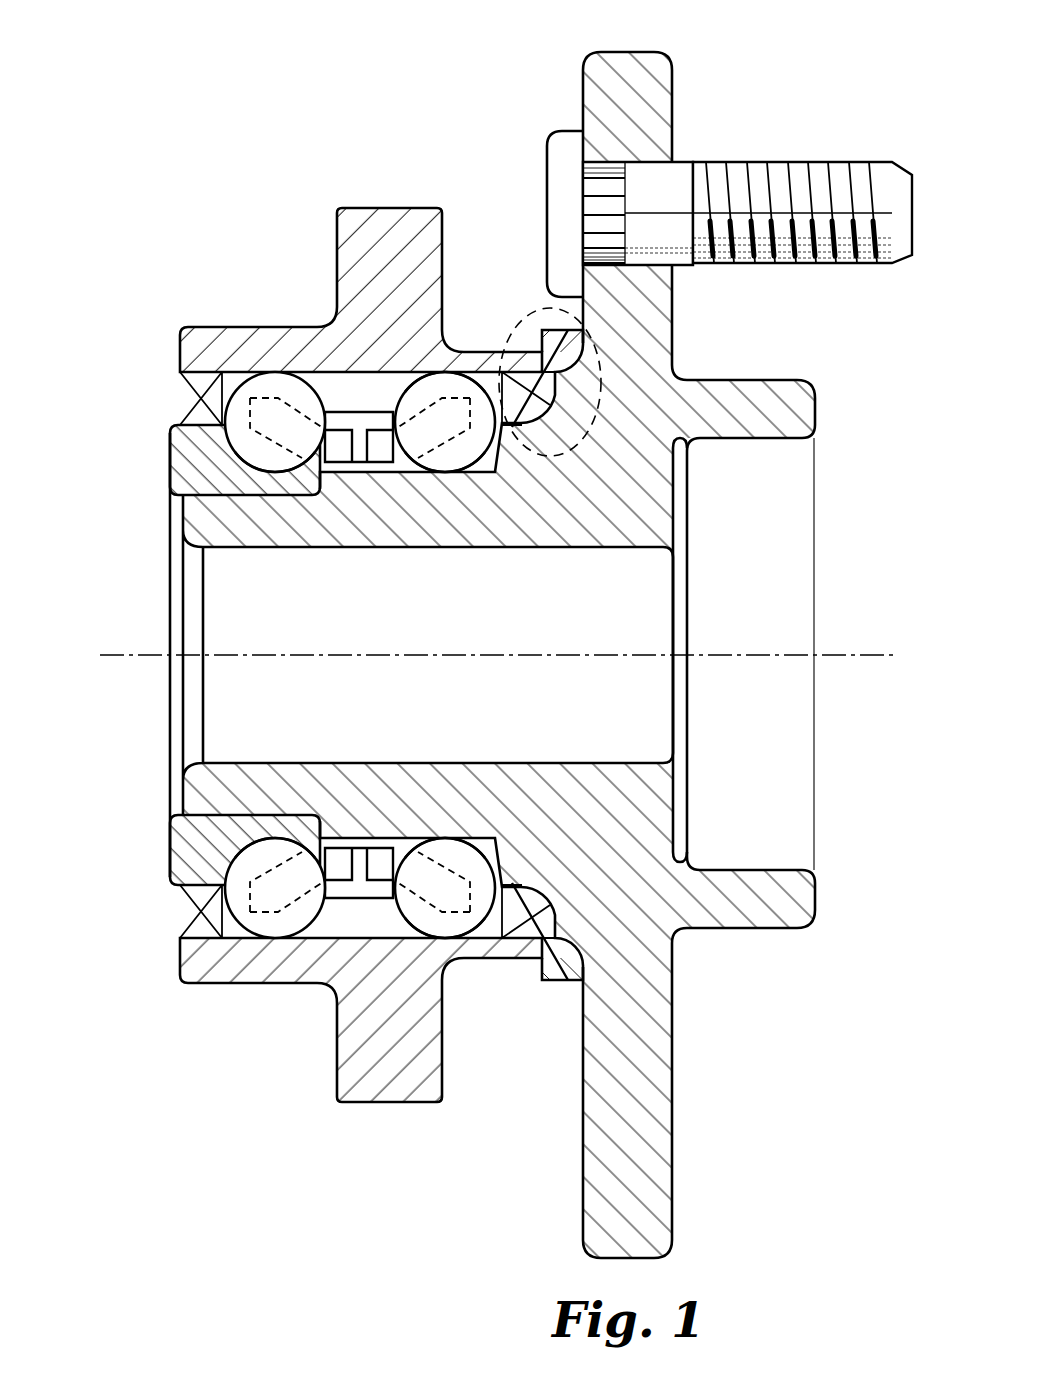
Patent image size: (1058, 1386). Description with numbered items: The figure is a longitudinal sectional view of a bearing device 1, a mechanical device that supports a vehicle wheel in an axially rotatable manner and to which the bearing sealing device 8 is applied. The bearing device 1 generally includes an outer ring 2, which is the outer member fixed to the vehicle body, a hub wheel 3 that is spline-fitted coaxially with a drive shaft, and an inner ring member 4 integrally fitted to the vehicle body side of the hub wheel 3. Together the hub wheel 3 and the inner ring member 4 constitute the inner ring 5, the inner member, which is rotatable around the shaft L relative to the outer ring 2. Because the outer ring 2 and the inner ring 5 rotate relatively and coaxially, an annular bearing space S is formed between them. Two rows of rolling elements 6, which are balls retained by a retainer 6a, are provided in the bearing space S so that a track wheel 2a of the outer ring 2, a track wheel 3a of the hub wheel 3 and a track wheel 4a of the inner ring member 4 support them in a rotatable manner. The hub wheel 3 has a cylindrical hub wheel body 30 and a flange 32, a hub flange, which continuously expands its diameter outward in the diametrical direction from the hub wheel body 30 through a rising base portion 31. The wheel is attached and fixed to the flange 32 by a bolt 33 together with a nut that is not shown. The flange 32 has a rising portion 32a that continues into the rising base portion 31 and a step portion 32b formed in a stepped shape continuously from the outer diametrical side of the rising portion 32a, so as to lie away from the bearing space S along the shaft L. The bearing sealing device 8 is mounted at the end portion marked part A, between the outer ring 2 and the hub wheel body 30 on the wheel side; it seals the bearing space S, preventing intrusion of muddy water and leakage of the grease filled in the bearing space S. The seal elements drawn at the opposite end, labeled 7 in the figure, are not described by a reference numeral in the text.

The bearing device 1 is at (392, 93).
The outer ring 2 is at (352, 265).
The track wheel of the outer ring 2a is at (282, 933).
The hub wheel 3 is at (208, 525).
The track wheel of the hub wheel 3a is at (476, 922).
The inner ring member 4 is at (177, 462).
The track wheel of the inner ring member 4a is at (212, 940).
The inner ring 5 is at (63, 460).
The rolling elements 6 is at (248, 392).
The retainer 6a is at (455, 395).
The seal 7 is at (195, 923).
The bearing sealing device 8 is at (546, 388).
The hub wheel body 30 is at (368, 777).
The rising base portion 31 is at (558, 428).
The flange 32 is at (583, 1208).
The rising portion 32a is at (555, 912).
The step portion 32b is at (583, 1083).
The bolt 33 is at (742, 174).
The part A is at (525, 337).
The shaft L is at (872, 640).
The bearing space S is at (351, 886).